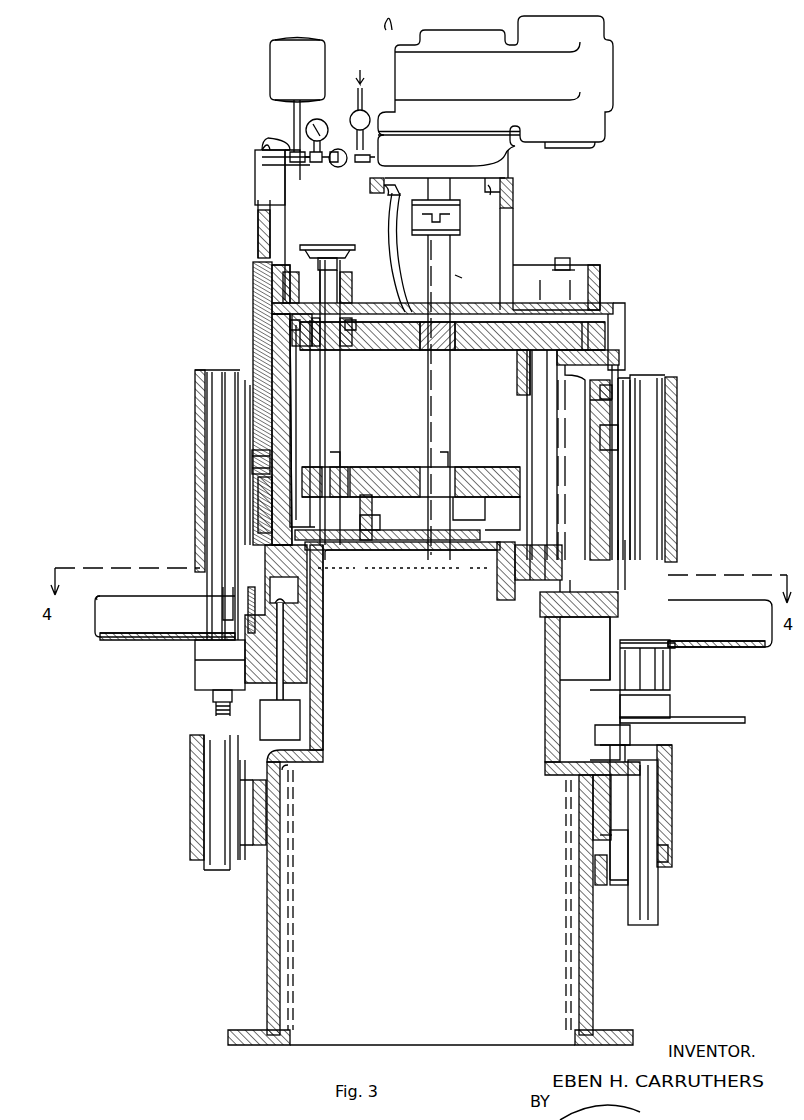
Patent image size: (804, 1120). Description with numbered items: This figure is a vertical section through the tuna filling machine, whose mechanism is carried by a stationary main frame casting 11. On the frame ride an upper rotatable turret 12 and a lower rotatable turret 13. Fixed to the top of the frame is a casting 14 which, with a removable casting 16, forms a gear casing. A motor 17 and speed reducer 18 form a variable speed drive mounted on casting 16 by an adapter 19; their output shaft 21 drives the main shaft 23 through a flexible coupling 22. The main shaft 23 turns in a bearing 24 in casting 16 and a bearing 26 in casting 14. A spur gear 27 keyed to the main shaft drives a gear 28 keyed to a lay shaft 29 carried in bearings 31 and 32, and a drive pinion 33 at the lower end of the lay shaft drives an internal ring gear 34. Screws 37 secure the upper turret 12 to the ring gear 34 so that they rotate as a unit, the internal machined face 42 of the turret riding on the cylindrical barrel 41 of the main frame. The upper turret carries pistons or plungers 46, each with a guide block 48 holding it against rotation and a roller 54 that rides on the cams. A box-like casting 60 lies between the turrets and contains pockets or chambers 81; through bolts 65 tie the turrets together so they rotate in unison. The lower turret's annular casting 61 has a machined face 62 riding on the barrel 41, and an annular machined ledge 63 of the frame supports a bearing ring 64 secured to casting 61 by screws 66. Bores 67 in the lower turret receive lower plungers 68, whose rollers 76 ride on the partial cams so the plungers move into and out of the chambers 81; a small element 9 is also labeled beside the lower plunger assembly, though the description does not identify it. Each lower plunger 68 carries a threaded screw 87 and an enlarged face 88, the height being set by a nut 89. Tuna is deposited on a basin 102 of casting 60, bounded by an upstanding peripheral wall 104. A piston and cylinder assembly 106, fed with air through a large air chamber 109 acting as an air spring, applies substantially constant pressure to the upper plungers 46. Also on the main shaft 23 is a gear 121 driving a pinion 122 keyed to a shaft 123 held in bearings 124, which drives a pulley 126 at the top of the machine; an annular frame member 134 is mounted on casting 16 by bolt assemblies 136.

The lower bearing member 9 is at (618, 866).
The main frame casting 11 is at (282, 848).
The upper rotatable turret 12 is at (678, 415).
The lower rotatable turret 13 is at (690, 778).
The casting 14 is at (598, 375).
The removable casting 16 is at (627, 318).
The motor 17 is at (613, 62).
The speed reducer 18 is at (388, 40).
The adapter 19 is at (515, 220).
The shaft 21 is at (452, 196).
The flexible coupling 22 is at (462, 218).
The main shaft 23 is at (452, 244).
The bearing 24 is at (472, 274).
The bearing 26 is at (470, 505).
The spur gear 27 is at (402, 352).
The gear 28 is at (608, 340).
The lay shaft 29 is at (528, 420).
The bearing 31 is at (515, 385).
The bearing 32 is at (518, 520).
The drive pinion 33 is at (500, 582).
The internal ring gear 34 is at (318, 566).
The screws 37 is at (605, 590).
The cylindrical face or barrel 41 is at (545, 672).
The internal machined face 42 is at (540, 622).
The pistons or plungers 46 is at (640, 470).
The guide block 48 is at (245, 472).
The roller 54 is at (252, 458).
The box-like casting 60 is at (669, 651).
The annular casting 61 is at (665, 805).
The machined face 62 is at (590, 712).
The annular machined ledge 63 is at (258, 505).
The bearing ring 64 is at (575, 770).
The through bolts 65 is at (307, 636).
The screws 66 is at (595, 734).
The bores 67 is at (660, 850).
The plungers 68 is at (212, 768).
The roller 76 is at (258, 790).
The pockets or chambers 81 is at (658, 668).
The threaded screw 87 is at (216, 714).
The enlarged face 88 is at (197, 678).
The nut 89 is at (213, 695).
The basin 102 is at (130, 640).
The upstanding peripheral wall 104 is at (95, 635).
The piston and cylinder assembly 106 is at (243, 207).
The air chamber 109 is at (318, 102).
The gear 121 is at (385, 467).
The pinion 122 is at (345, 467).
The shaft 123 is at (340, 423).
The bearings 124 is at (340, 348).
The pulley 126 is at (315, 243).
The annular frame member 134 is at (600, 272).
The bolt assemblies 136 is at (572, 262).